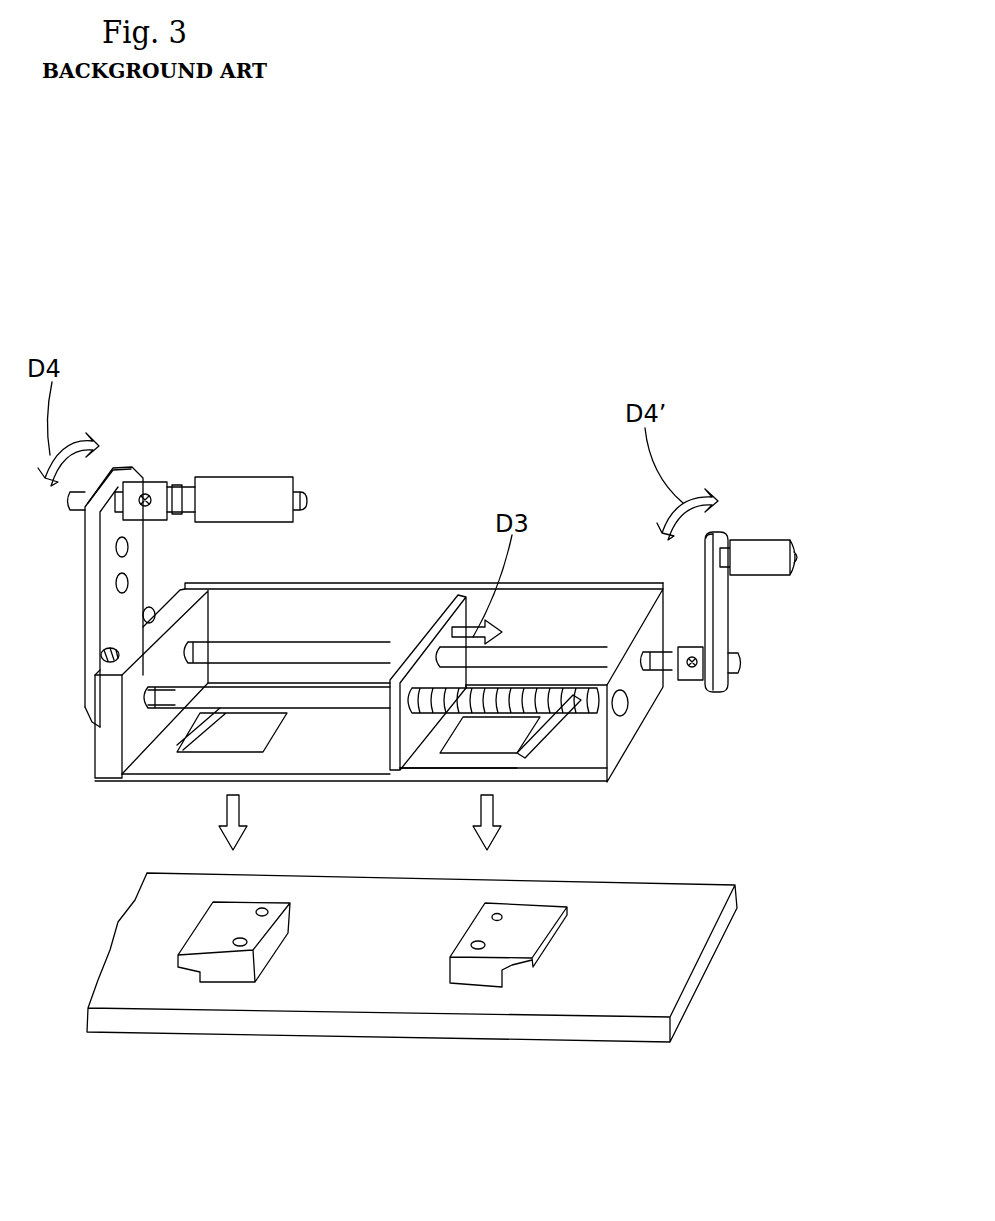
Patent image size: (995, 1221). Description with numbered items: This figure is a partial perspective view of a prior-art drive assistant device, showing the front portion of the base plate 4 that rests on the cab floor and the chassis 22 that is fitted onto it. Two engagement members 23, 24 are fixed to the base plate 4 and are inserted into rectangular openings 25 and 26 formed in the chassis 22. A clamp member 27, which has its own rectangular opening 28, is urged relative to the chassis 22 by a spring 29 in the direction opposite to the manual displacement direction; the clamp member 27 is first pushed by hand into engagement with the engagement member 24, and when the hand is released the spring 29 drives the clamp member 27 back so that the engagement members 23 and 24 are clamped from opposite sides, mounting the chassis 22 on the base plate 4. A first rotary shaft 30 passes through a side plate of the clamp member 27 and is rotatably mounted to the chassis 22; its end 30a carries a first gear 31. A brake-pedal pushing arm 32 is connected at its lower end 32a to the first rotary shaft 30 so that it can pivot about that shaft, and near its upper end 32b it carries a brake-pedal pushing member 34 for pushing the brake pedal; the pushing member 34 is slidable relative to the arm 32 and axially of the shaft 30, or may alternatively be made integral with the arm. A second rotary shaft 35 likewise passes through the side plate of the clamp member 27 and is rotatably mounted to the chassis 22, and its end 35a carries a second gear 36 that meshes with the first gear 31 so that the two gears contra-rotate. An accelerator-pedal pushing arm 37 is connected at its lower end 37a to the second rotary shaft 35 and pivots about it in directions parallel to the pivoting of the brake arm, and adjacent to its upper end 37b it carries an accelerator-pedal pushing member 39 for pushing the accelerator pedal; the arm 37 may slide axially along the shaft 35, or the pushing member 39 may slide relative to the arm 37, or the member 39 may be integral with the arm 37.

The base plate 4 is at (660, 887).
The chassis 22 is at (648, 746).
The engagement member 23 is at (248, 907).
The engagement member 24 is at (533, 902).
The rectangular opening 25 is at (217, 740).
The rectangular opening 26 is at (557, 750).
The clamp member 27 is at (427, 755).
The rectangular opening 28 is at (470, 745).
The spring 29 is at (592, 722).
The first rotary shaft 30 is at (343, 700).
The end of first rotary shaft 30a is at (170, 702).
The first gear 31 is at (107, 652).
The brake-pedal pushing arm 32 is at (107, 612).
The lower end of brake-pedal pushing arm 32a is at (85, 712).
The upper end of brake-pedal pushing arm 32b is at (113, 468).
The brake-pedal pushing member 34 is at (250, 483).
The second rotary shaft 35 is at (360, 645).
The end of second rotary shaft 35a is at (222, 642).
The second gear 36 is at (147, 620).
The accelerator-pedal pushing arm 37 is at (725, 617).
The lower end of accelerator-pedal pushing arm 37a is at (720, 682).
The upper end of accelerator-pedal pushing arm 37b is at (718, 532).
The accelerator-pedal pushing member 39 is at (760, 550).